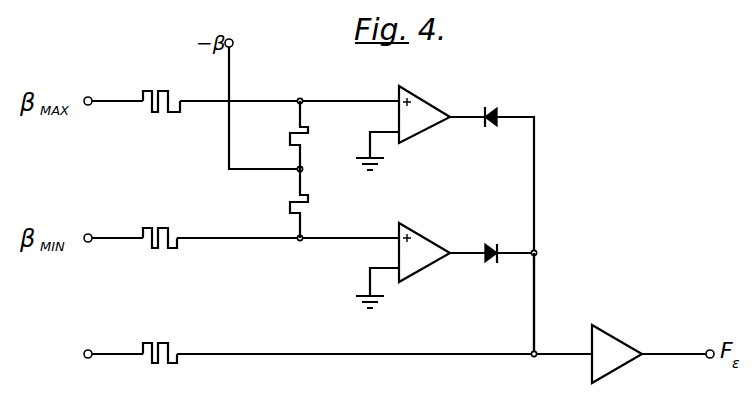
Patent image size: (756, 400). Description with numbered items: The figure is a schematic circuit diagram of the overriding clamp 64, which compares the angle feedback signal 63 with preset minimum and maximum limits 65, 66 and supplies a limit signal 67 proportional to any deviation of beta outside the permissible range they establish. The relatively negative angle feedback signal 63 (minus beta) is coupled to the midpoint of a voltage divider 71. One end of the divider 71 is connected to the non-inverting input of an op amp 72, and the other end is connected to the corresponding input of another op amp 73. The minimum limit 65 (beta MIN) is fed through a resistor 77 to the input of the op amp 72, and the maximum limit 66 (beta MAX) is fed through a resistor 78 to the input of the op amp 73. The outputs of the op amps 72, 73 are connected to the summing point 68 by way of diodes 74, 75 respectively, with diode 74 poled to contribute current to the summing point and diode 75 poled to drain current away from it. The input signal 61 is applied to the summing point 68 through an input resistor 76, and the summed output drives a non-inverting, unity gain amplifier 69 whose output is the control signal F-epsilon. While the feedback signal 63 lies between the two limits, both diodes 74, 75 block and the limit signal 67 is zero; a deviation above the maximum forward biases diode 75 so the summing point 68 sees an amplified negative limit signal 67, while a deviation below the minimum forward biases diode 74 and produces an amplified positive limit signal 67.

The input signal 61 is at (91, 350).
The angle feedback signal 63 is at (233, 41).
The overriding clamp 64 is at (306, 302).
The minimum limit 65 is at (91, 234).
The maximum limit 66 is at (91, 97).
The limit signal 67 is at (535, 275).
The summing point 68 is at (530, 357).
The output amplifier 69 is at (620, 339).
The voltage divider 71 is at (313, 169).
The op amp 72 is at (428, 235).
The op amp 73 is at (428, 99).
The diode 74 is at (493, 262).
The diode 75 is at (490, 126).
The input resistor 76 is at (163, 343).
The resistor 77 is at (163, 228).
The resistor 78 is at (163, 91).